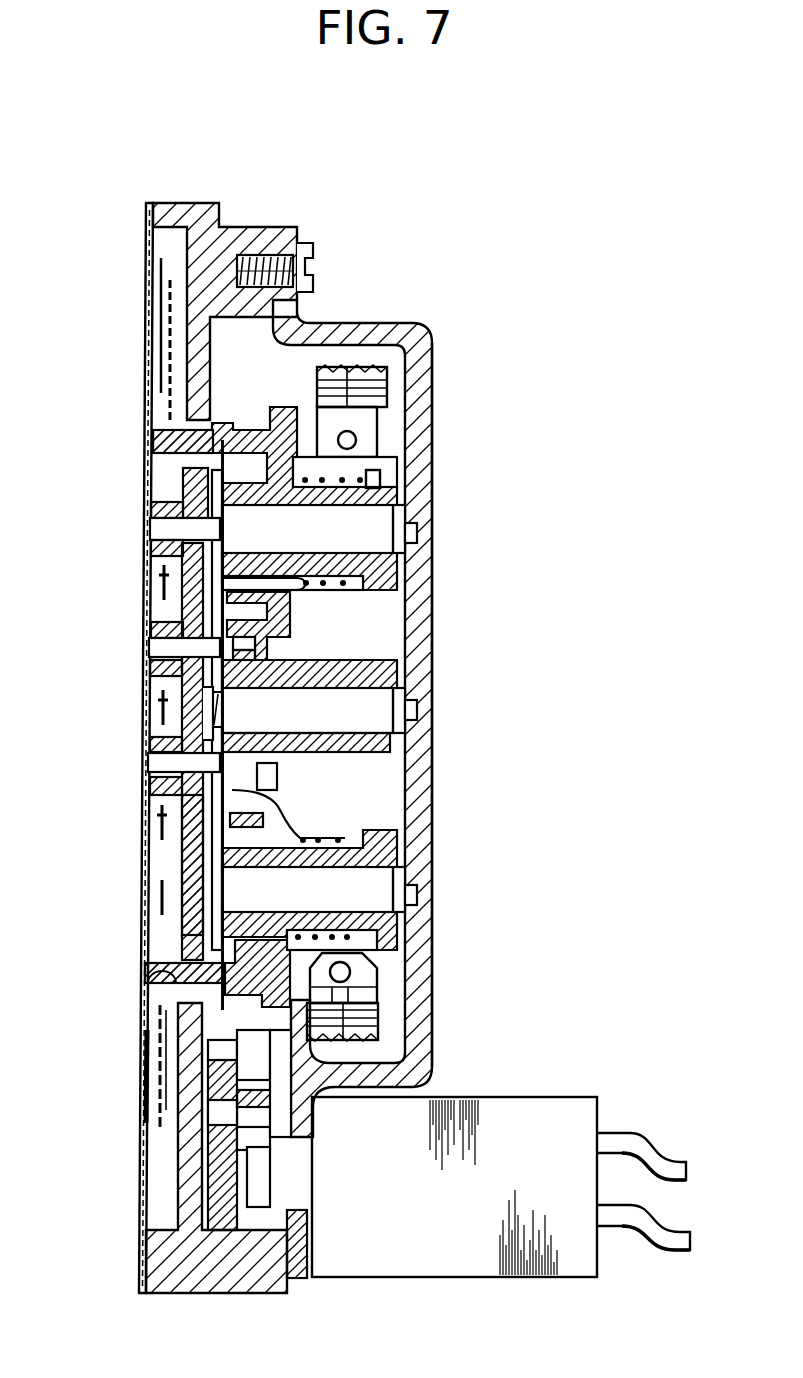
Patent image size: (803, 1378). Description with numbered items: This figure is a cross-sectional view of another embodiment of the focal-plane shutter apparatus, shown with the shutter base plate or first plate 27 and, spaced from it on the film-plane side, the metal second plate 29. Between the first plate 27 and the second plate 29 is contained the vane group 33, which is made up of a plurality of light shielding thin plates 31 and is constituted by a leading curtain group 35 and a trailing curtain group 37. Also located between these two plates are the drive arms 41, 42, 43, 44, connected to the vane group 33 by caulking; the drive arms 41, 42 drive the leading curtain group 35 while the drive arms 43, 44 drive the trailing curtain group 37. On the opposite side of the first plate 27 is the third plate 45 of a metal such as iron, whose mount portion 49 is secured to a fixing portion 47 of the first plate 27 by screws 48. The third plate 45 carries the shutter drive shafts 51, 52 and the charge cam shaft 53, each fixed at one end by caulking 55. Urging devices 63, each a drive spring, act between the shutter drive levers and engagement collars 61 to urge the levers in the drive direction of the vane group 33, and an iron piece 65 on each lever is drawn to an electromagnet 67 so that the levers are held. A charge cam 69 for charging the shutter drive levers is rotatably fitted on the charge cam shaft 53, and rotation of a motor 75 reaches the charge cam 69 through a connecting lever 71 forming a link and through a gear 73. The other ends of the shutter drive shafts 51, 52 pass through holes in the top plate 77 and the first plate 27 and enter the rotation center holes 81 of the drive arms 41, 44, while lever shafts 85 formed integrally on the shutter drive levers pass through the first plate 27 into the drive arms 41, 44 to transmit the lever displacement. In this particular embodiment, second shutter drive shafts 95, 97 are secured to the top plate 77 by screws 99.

The first plate 27 is at (296, 320).
The second plate 29 is at (150, 235).
The light shielding thin plates 31 is at (168, 345).
The vane group 33 is at (148, 1120).
The leading curtain group 35 is at (155, 295).
The trailing curtain group 37 is at (153, 1035).
The drive arm 41 is at (178, 420).
The drive arm 42 is at (182, 678).
The drive arm 43 is at (185, 815).
The drive arm 44 is at (180, 1003).
The third plate 45 is at (420, 370).
The fixing portion 47 is at (248, 203).
The screws 48 is at (310, 255).
The mount portion 49 is at (295, 228).
The shutter drive shaft 51 is at (360, 530).
The shutter drive shaft 52 is at (370, 880).
The charge cam shaft 53 is at (365, 705).
The caulking 55 is at (410, 530).
The engagement collars 61 is at (370, 583).
The urging devices 63 is at (360, 460).
The iron piece 65 is at (330, 437).
The electromagnets 67 is at (375, 367).
The charge cam 69 is at (395, 655).
The connecting lever 71 is at (312, 1100).
The gear 73 is at (265, 1185).
The motor 75 is at (570, 1110).
The top plate 77 is at (215, 487).
The rotation center holes 81 is at (155, 585).
The lever shafts 85 is at (210, 435).
The second shutter drive shaft 95 is at (165, 640).
The second shutter drive shaft 97 is at (215, 768).
The screws 99 is at (270, 650).